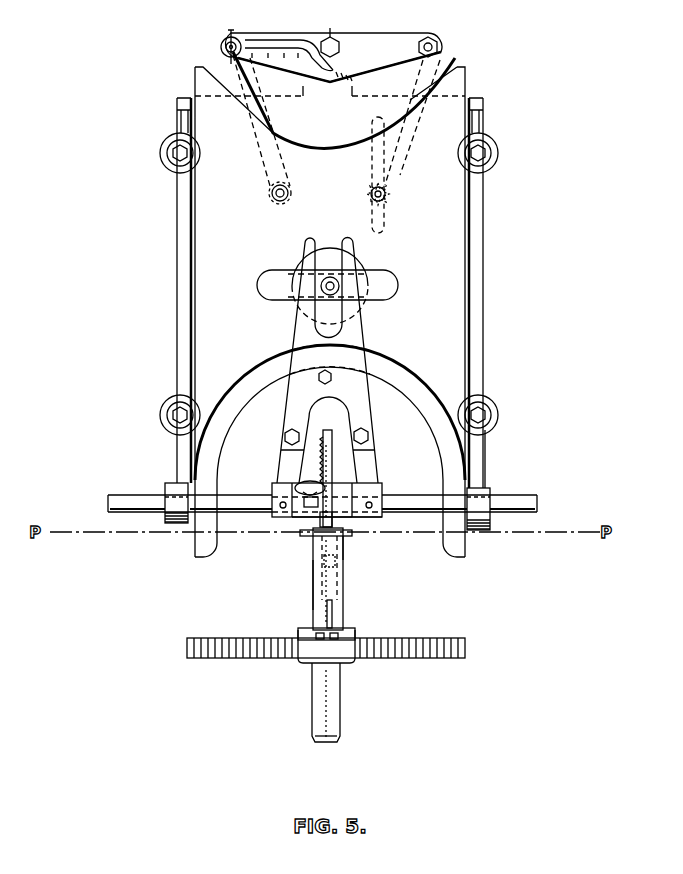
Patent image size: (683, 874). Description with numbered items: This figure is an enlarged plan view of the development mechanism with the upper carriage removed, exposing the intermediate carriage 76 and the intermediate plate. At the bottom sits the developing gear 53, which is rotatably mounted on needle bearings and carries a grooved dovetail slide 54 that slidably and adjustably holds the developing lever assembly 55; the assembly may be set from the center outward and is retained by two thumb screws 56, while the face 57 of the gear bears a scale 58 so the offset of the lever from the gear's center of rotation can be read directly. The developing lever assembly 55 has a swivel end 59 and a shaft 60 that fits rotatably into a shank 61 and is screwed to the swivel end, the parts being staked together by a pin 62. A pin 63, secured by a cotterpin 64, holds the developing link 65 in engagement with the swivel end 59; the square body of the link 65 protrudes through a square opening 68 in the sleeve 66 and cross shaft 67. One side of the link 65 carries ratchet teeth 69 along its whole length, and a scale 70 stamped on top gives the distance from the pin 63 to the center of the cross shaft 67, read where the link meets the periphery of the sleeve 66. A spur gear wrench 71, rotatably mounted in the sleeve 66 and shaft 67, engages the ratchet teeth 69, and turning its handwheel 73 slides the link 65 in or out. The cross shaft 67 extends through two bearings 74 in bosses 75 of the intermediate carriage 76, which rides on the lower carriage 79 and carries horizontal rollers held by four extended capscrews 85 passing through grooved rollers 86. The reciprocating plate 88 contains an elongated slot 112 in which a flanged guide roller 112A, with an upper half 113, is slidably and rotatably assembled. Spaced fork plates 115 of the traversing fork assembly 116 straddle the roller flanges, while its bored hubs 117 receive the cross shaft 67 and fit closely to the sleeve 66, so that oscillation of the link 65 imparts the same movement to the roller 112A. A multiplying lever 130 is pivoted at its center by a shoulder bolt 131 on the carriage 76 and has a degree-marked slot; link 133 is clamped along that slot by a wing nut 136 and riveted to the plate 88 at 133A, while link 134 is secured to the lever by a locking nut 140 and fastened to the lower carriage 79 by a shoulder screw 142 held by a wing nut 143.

The developing gear 53 is at (400, 657).
The grooved dovetail slide 54 is at (354, 634).
The developing lever assembly 55 is at (324, 585).
The thumb screws 56 is at (333, 609).
The face of developing gear 57 is at (298, 634).
The scale 58 is at (302, 630).
The swivel end 59 is at (343, 579).
The shaft 60 is at (318, 599).
The shank 61 is at (312, 588).
The pin 62 is at (325, 564).
The pin 63 is at (346, 540).
The cotterpin 64 is at (313, 546).
The developing link 65 is at (326, 434).
The sleeve 66 is at (350, 520).
The cross shaft 67 is at (520, 515).
The square opening 68 is at (321, 525).
The ratchet teeth 69 is at (288, 457).
The scale 70 is at (346, 440).
The spur gear wrench 71 is at (311, 508).
The handwheel 73 is at (297, 488).
The bearings 74 is at (168, 491).
The bosses 75 is at (172, 524).
The intermediate carriage 76 is at (484, 471).
The lower carriage 79 is at (196, 548).
The extended capscrews 85 is at (489, 165).
The grooved rollers 86 is at (498, 145).
The reciprocating plate 88 is at (466, 78).
The elongated slot 112 is at (258, 284).
The flanged guide roller 112A is at (333, 233).
The upper half 113 is at (299, 262).
The fork plates 115 is at (356, 337).
The traversing fork assembly 116 is at (381, 492).
The bored hubs 117 is at (383, 535).
The multiplying lever 130 is at (378, 34).
The shoulder bolt 131 is at (330, 28).
The link 133 is at (224, 60).
The rivet connection 133A is at (289, 190).
The link 134 is at (450, 57).
The wing nut 136 is at (232, 30).
The locking nut 140 is at (430, 36).
The shoulder screw 142 is at (388, 191).
The wing nut 143 is at (389, 205).